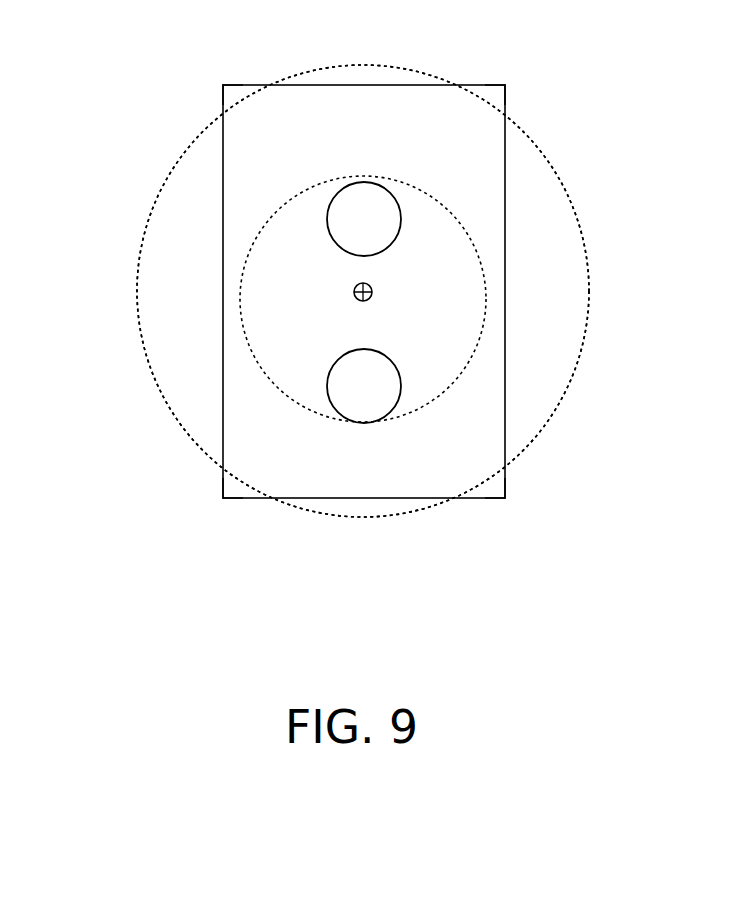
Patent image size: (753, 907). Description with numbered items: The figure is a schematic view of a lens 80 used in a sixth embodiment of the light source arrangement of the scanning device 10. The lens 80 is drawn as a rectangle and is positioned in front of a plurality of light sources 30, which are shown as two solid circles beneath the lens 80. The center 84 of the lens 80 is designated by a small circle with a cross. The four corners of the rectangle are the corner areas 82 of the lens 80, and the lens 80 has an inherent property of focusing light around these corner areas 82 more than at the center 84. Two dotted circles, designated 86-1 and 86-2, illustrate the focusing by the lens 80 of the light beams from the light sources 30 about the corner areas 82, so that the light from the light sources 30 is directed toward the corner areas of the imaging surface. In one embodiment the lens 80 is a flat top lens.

The scanning device 10 is at (363, 67).
The light sources 30 is at (397, 243).
The lens 80 is at (505, 197).
The corner area 82 is at (223, 85).
The center 84 is at (372, 293).
The dotted circle 86-1 is at (273, 220).
The dotted circle 86-2 is at (155, 378).